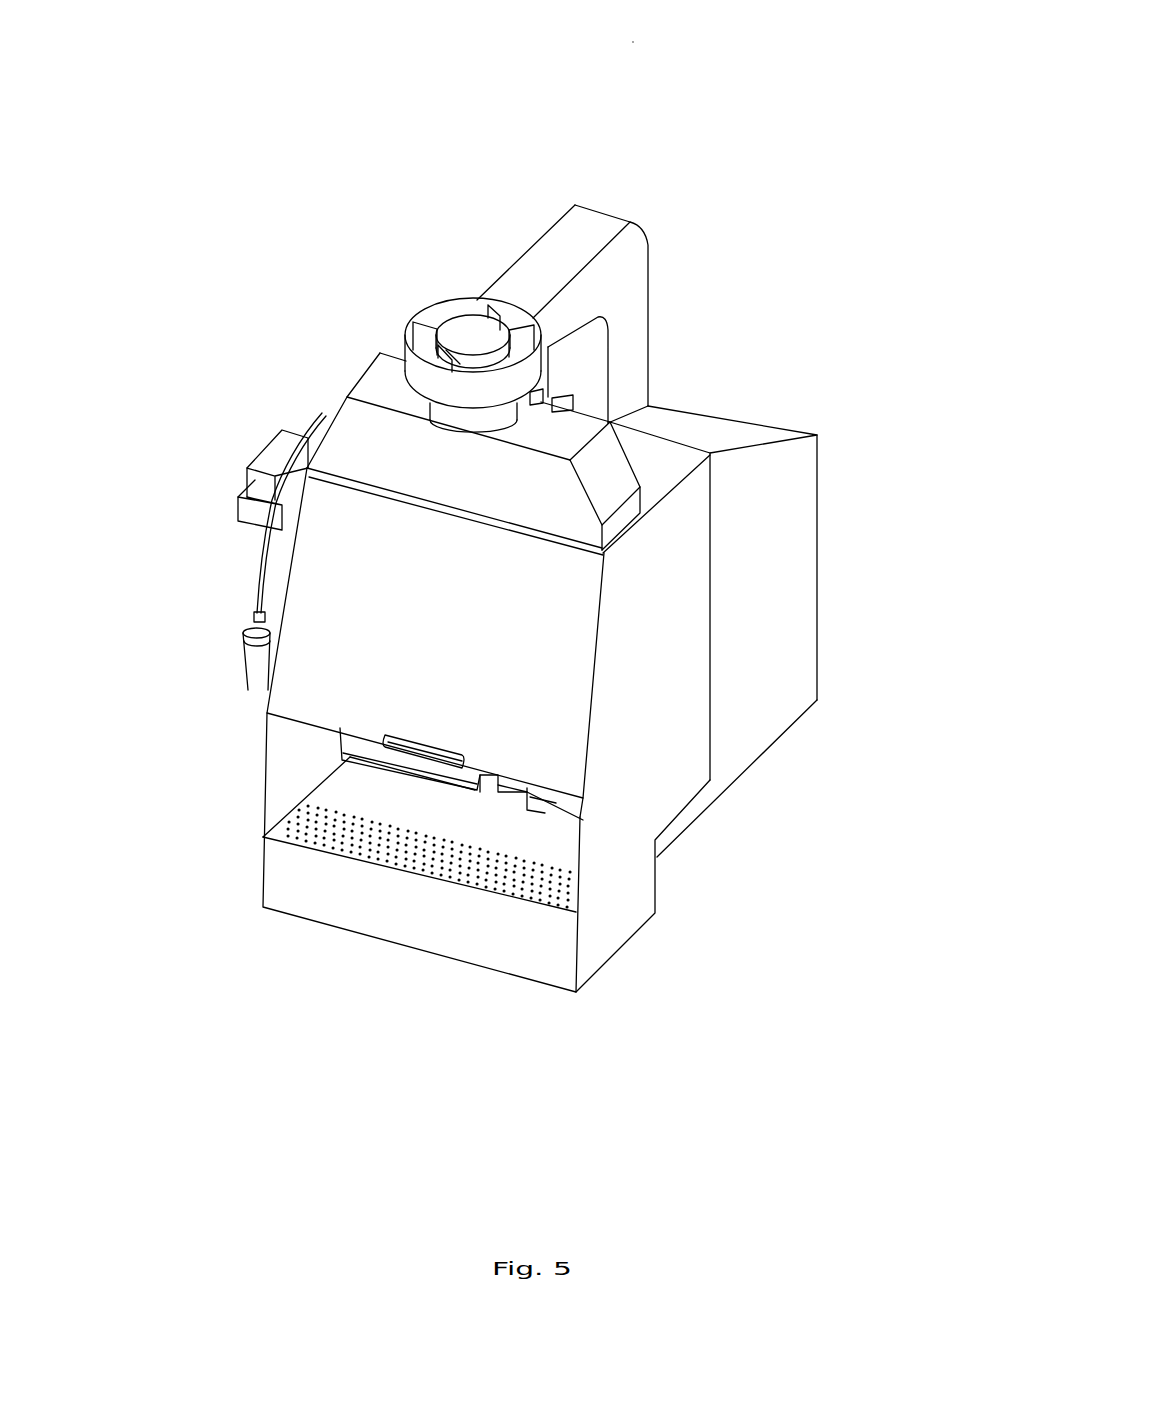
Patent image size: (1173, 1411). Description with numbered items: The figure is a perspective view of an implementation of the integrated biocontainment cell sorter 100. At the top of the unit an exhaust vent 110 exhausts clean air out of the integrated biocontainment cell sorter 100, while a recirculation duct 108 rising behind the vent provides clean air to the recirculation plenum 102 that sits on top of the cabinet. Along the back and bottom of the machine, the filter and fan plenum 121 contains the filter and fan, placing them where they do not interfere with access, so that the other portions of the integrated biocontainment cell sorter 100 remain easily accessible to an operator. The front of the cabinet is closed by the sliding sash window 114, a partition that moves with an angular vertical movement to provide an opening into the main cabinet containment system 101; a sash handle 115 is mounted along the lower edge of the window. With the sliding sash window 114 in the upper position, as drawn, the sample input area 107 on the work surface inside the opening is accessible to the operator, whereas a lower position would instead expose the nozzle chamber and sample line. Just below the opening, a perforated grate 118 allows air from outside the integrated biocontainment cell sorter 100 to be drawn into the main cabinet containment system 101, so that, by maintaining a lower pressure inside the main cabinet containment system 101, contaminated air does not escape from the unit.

The integrated biocontainment cell sorter 100 is at (633, 42).
The main cabinet containment system 101 is at (613, 807).
The recirculation plenum 102 is at (360, 442).
The sample input area 107 is at (527, 808).
The recirculation duct 108 is at (628, 268).
The exhaust vent 110 is at (415, 366).
The sliding sash window 114 is at (333, 660).
The sash handle 115 is at (413, 757).
The grate 118 is at (517, 897).
The filter and fan plenum 121 is at (773, 572).